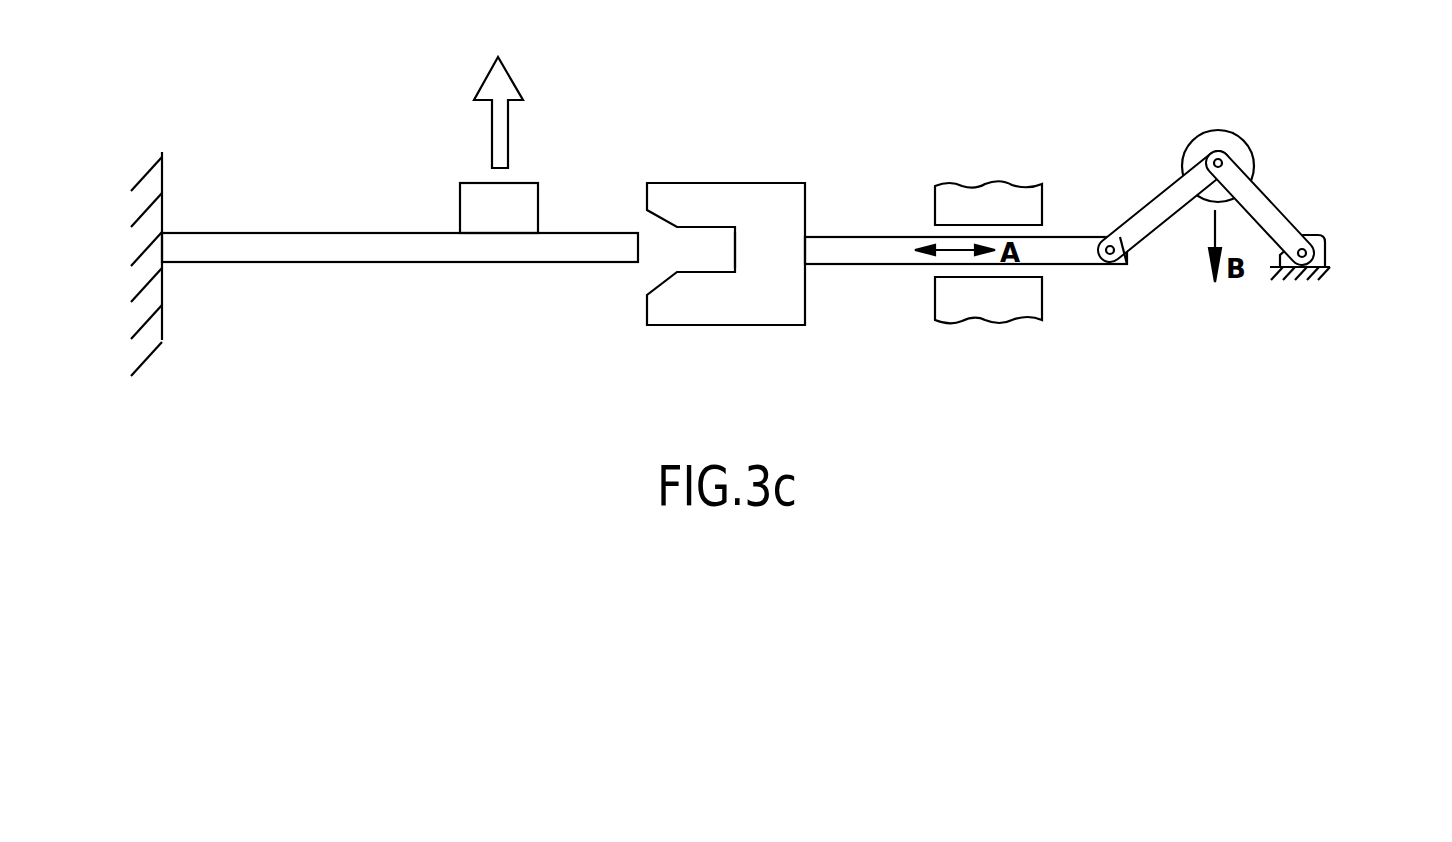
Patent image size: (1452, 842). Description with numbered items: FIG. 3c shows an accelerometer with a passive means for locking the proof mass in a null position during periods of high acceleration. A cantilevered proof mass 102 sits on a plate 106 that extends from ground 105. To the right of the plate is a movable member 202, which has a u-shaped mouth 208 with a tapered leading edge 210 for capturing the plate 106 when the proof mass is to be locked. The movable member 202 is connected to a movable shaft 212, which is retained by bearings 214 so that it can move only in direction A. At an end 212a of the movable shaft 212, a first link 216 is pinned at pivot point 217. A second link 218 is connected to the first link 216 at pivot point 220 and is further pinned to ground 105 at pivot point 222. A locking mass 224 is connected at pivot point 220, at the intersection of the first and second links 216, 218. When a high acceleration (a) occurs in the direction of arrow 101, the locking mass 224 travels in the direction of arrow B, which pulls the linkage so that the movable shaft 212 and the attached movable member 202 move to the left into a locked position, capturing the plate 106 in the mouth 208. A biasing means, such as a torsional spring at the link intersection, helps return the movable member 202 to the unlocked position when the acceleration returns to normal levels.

The arrow 101 is at (517, 80).
The proof mass 102 is at (458, 198).
The ground 105 is at (163, 177).
The plate 106 is at (432, 263).
The movable member 202 is at (740, 325).
The u-shaped mouth 208 is at (708, 247).
The tapered leading edge 210 is at (710, 183).
The movable shaft 212 is at (855, 265).
The end of the movable shaft 212a is at (1110, 266).
The bearings 214 is at (952, 186).
The first link 216 is at (1163, 188).
The pivot point 217 is at (1127, 262).
The second link 218 is at (1268, 197).
The pivot point 220 is at (1227, 157).
The pivot point 222 is at (1325, 248).
The locking mass 224 is at (1195, 138).